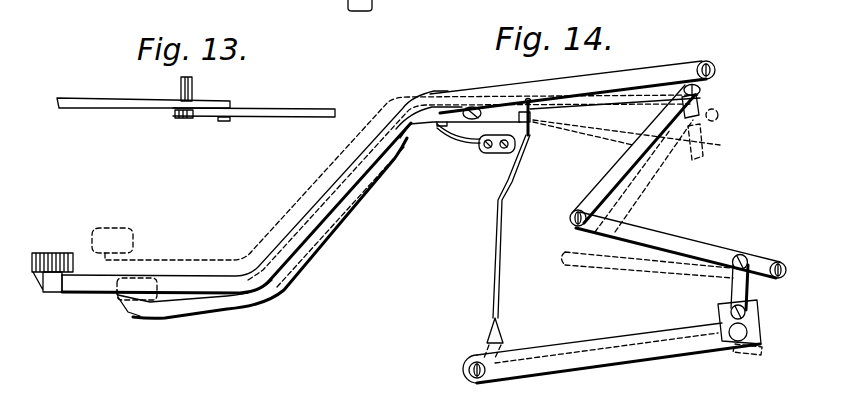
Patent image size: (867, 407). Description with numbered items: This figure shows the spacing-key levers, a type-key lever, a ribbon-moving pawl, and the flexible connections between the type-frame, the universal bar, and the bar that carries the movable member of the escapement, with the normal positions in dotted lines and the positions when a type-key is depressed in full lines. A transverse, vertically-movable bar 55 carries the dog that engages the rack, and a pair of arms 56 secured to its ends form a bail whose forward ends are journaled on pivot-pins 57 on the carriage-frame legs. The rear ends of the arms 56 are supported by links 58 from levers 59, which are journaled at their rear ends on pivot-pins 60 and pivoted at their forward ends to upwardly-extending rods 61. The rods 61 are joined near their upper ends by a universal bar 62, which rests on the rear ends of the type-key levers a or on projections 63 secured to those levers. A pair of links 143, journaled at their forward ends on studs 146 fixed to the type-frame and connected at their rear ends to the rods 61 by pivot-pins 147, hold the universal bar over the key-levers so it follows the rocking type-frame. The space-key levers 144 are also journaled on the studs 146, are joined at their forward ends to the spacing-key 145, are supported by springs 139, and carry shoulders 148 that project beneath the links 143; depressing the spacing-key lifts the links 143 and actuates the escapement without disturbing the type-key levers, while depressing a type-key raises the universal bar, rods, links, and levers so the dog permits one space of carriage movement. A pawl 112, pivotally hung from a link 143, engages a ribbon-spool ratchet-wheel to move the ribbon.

In FIG. 13, the link 143 is at (282, 109).
In FIG. 14, the link 143 is at (612, 82).
In FIG. 13, the space-key lever 144 is at (110, 108).
In FIG. 14, the space-key lever 144 is at (95, 290).
In FIG. 14, the spacing-key 145 is at (60, 245).
In FIG. 13, the pivot pin or stud 146 is at (185, 118).
In FIG. 14, the pivot pin or stud 146 is at (472, 106).
In FIG. 14, the pivot-pin 147 is at (712, 60).
In FIG. 13, the shoulder 148 is at (225, 121).
In FIG. 14, the shoulder 148 is at (619, 129).
In FIG. 14, the spring 139 is at (462, 139).
In FIG. 14, the pawl 112 is at (497, 250).
In FIG. 14, the rod 61 is at (612, 166).
In FIG. 14, the universal bar 62 is at (702, 90).
In FIG. 14, the projection 63 is at (700, 98).
In FIG. 14, the lever 59 is at (675, 243).
In FIG. 14, the pivot-pin 60 is at (781, 271).
In FIG. 14, the link 58 is at (733, 287).
In FIG. 14, the pivot-pin 57 is at (467, 371).
In FIG. 14, the arm 56 is at (625, 353).
In FIG. 14, the bar 55 is at (759, 331).
In FIG. 14, the type-key lever a is at (228, 309).